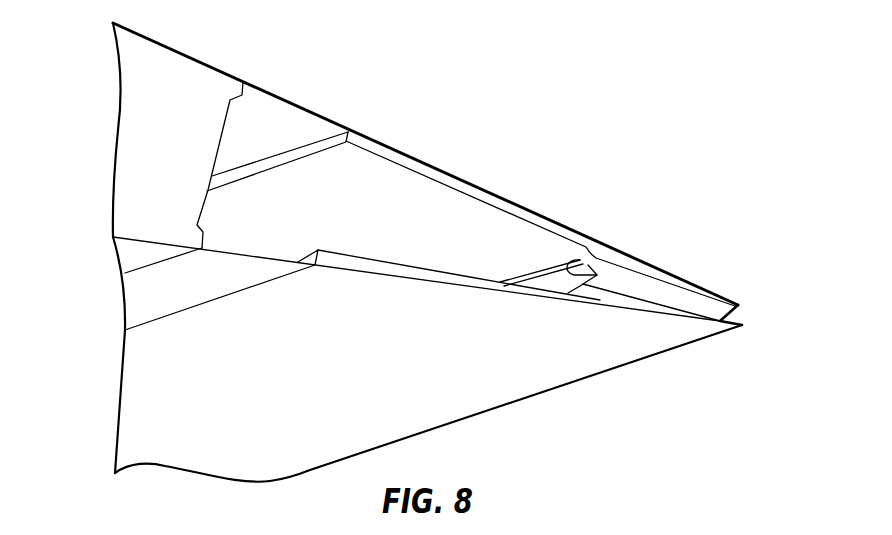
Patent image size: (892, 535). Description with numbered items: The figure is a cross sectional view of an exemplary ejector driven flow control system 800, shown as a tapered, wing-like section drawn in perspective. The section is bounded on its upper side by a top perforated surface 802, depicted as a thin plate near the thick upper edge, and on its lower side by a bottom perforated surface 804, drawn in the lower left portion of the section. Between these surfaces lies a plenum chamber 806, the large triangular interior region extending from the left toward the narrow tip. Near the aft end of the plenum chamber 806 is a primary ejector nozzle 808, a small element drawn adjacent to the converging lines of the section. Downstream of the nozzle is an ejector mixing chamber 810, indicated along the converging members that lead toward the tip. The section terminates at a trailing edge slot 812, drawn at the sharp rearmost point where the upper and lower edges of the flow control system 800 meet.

The ejector driven flow control system 800 is at (582, 100).
The top perforated surface 802 is at (272, 118).
The bottom perforated surface 804 is at (152, 293).
The plenum chamber 806 is at (412, 188).
The primary ejector nozzle 808 is at (575, 267).
The ejector mixing chamber 810 is at (670, 293).
The trailing edge slot 812 is at (737, 314).